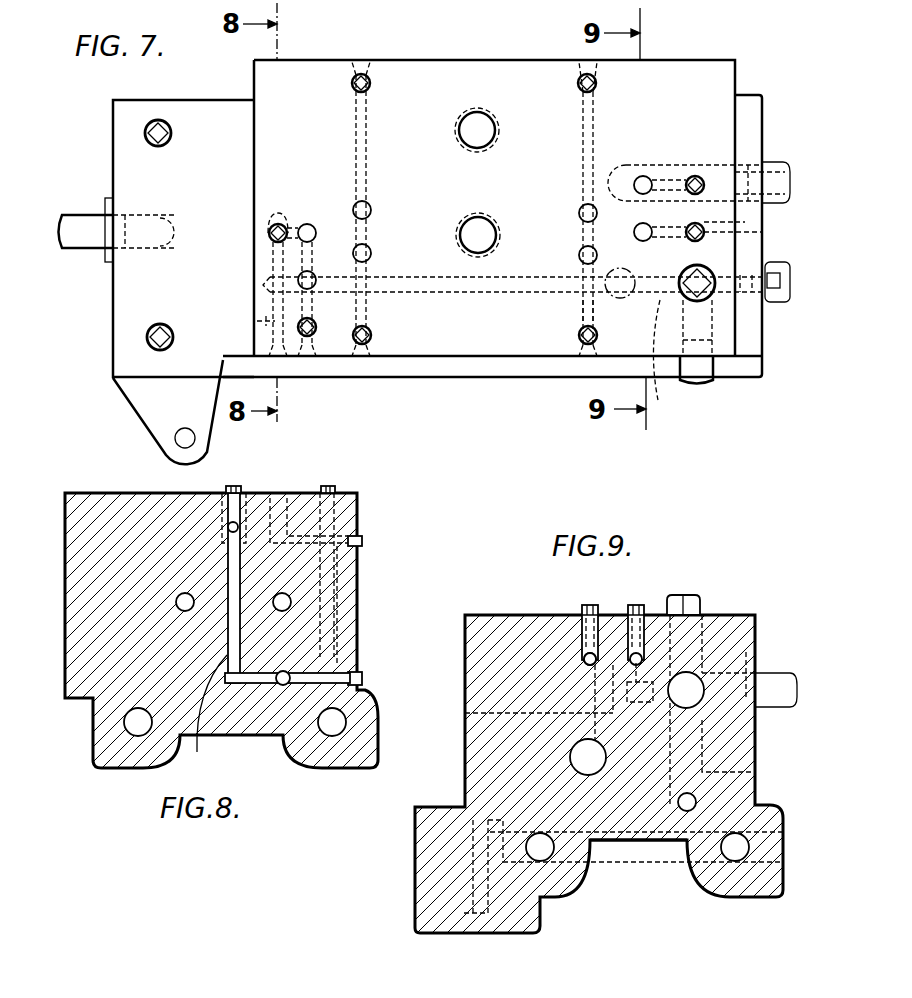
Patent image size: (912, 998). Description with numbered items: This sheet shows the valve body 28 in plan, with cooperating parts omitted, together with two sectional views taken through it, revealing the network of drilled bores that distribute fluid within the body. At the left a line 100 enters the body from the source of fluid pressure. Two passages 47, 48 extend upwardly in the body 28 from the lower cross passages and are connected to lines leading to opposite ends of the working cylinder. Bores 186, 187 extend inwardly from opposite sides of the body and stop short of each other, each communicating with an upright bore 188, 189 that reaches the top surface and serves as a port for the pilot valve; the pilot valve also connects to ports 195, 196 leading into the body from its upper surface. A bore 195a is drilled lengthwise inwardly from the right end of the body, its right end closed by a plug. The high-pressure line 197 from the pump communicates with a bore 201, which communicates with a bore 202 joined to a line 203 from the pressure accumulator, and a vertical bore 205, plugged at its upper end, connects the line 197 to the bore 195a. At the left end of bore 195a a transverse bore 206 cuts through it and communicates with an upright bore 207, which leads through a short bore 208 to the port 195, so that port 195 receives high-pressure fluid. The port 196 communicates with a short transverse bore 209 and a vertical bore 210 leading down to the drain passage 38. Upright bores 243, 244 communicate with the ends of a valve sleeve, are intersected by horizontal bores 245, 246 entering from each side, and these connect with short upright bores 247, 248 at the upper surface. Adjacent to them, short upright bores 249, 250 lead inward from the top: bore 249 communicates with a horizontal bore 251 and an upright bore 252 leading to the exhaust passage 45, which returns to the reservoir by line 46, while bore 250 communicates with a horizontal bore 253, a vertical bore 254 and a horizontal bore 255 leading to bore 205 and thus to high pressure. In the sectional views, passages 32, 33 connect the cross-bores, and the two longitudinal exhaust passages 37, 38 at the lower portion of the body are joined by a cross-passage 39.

In FIG. 7, the valve body 28 is at (460, 61).
In FIG. 9, the valve body 28 is at (477, 608).
In FIG. 7, the line 100 is at (70, 215).
In FIG. 7, the passage 47 is at (470, 116).
In FIG. 7, the passage 48 is at (473, 218).
In FIG. 7, the passage 45 is at (637, 163).
In FIG. 9, the passage 45 is at (574, 760).
In FIG. 7, the line 46 is at (771, 163).
In FIG. 7, the bore 186 is at (367, 146).
In FIG. 7, the bore 187 is at (368, 320).
In FIG. 7, the upright bore 188 is at (369, 204).
In FIG. 7, the upright bore 189 is at (370, 252).
In FIG. 7, the port 195 is at (309, 224).
In FIG. 8, the port 195 is at (222, 501).
In FIG. 7, the bore 195a is at (492, 292).
In FIG. 8, the bore 195a is at (282, 688).
In FIG. 9, the bore 195a is at (684, 812).
In FIG. 7, the port 196 is at (311, 272).
In FIG. 8, the port 196 is at (290, 500).
In FIG. 7, the high-pressure line 197 is at (705, 374).
In FIG. 9, the high-pressure line 197 is at (772, 673).
In FIG. 7, the bore 201 is at (682, 358).
In FIG. 9, the bore 201 is at (746, 652).
In FIG. 7, the bore 202 is at (681, 303).
In FIG. 9, the bore 202 is at (692, 705).
In FIG. 7, the line 203 is at (777, 262).
In FIG. 9, the vertical bore 205 is at (703, 640).
In FIG. 7, the transverse bore 206 is at (262, 323).
In FIG. 8, the transverse bore 206 is at (357, 655).
In FIG. 7, the upright bore 207 is at (271, 241).
In FIG. 8, the upright bore 207 is at (204, 715).
In FIG. 7, the short bore 208 is at (273, 222).
In FIG. 8, the short bore 208 is at (236, 524).
In FIG. 7, the short transverse bore 209 is at (313, 318).
In FIG. 8, the short transverse bore 209 is at (363, 511).
In FIG. 8, the vertical bore 210 is at (340, 612).
In FIG. 7, the upright bore 243 is at (576, 84).
In FIG. 7, the upright bore 244 is at (578, 337).
In FIG. 7, the horizontal bore 245 is at (582, 139).
In FIG. 7, the horizontal bore 246 is at (583, 309).
In FIG. 7, the short upright bore 247 is at (578, 214).
In FIG. 7, the short upright bore 248 is at (578, 256).
In FIG. 7, the short upright bore 249 is at (648, 177).
In FIG. 9, the short upright bore 249 is at (580, 632).
In FIG. 7, the short upright bore 250 is at (626, 229).
In FIG. 9, the short upright bore 250 is at (655, 614).
In FIG. 7, the horizontal bore 251 is at (683, 176).
In FIG. 9, the horizontal bore 251 is at (584, 660).
In FIG. 7, the upright bore 252 is at (696, 196).
In FIG. 9, the upright bore 252 is at (465, 713).
In FIG. 7, the horizontal bore 253 is at (663, 245).
In FIG. 9, the horizontal bore 253 is at (629, 660).
In FIG. 7, the vertical bore 254 is at (745, 226).
In FIG. 9, the vertical bore 254 is at (630, 699).
In FIG. 9, the horizontal bore 255 is at (651, 733).
In FIG. 8, the passage 32 is at (177, 602).
In FIG. 8, the passage 33 is at (291, 601).
In FIG. 8, the exhaust passage 37 is at (136, 732).
In FIG. 9, the exhaust passage 37 is at (543, 862).
In FIG. 8, the exhaust passage 38 is at (330, 731).
In FIG. 9, the exhaust passage 38 is at (735, 862).
In FIG. 9, the cross-passage 39 is at (612, 866).